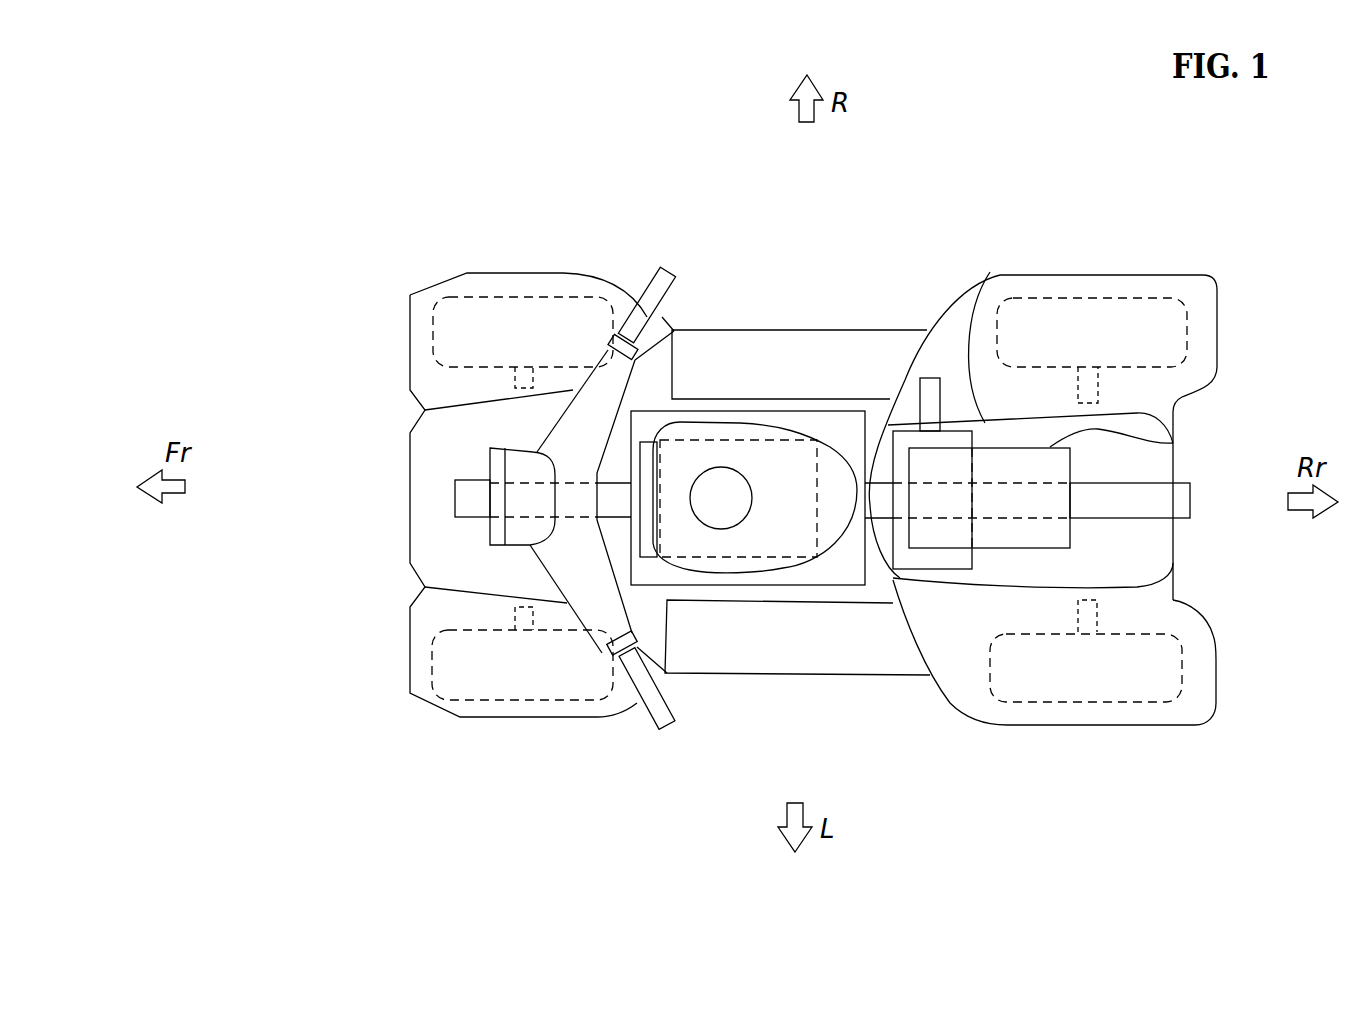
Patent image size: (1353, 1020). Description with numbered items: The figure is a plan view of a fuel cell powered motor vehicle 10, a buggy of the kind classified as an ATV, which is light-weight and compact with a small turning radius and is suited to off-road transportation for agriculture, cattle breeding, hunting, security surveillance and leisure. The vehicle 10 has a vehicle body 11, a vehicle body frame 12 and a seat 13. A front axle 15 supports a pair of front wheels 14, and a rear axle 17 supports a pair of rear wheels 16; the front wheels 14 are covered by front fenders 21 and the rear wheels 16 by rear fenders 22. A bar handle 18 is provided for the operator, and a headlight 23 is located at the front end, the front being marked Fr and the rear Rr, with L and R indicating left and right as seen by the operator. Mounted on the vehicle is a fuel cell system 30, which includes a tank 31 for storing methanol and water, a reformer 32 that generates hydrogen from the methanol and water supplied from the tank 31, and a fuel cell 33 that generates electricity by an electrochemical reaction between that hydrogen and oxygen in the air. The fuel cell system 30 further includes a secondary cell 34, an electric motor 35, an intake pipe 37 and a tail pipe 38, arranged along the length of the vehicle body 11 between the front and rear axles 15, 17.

The fuel cell powered motor vehicle 10 is at (323, 135).
The vehicle body 11 is at (752, 300).
The vehicle body frame 12 is at (700, 673).
The seat 13 is at (985, 423).
The front wheels 14 is at (563, 297).
The front axle 15 is at (515, 372).
The rear wheels 16 is at (1138, 297).
The rear axle 17 is at (1100, 613).
The bar handle 18 is at (645, 280).
The front fenders 21 is at (473, 270).
The rear fenders 22 is at (1050, 272).
The headlight 23 is at (490, 450).
The fuel cell system 30 is at (806, 430).
The tank 31 is at (730, 573).
The reformer 32 is at (773, 557).
The fuel cell 33 is at (843, 587).
The secondary cell 34 is at (1173, 443).
The electric motor 35 is at (937, 568).
The intake pipe 37 is at (455, 503).
The tail pipe 38 is at (1137, 477).